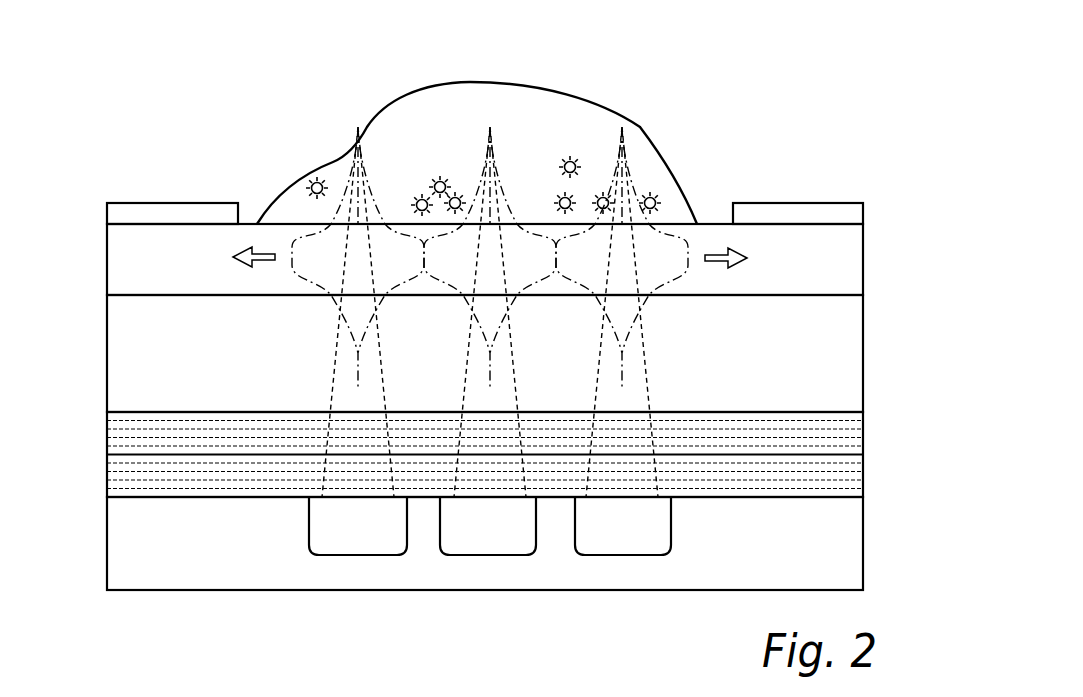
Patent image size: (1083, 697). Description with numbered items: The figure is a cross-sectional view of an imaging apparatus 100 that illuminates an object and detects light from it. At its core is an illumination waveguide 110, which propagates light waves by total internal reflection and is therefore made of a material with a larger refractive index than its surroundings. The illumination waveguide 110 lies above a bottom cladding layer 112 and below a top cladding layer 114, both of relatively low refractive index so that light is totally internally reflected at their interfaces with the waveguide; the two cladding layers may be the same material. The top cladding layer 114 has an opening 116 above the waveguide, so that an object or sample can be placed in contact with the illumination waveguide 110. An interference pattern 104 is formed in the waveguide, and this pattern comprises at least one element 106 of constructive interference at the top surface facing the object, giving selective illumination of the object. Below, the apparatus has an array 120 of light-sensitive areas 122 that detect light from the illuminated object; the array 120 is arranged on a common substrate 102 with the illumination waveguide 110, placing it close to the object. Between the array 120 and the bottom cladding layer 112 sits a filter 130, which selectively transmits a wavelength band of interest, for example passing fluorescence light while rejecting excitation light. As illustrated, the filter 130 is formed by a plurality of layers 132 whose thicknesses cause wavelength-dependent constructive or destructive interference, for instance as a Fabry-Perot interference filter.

The imaging apparatus 100 is at (872, 66).
The common substrate 102 is at (843, 538).
The interference pattern 104 is at (673, 173).
The element of constructive interference 106 is at (372, 224).
The illumination waveguide 110 is at (848, 275).
The bottom cladding layer 112 is at (848, 352).
The top cladding layer 114 is at (850, 210).
The opening 116 is at (712, 215).
The array of light-sensitive areas 120 is at (286, 556).
The light-sensitive area 122 is at (350, 543).
The filter 130 is at (800, 428).
The layers 132 is at (858, 483).